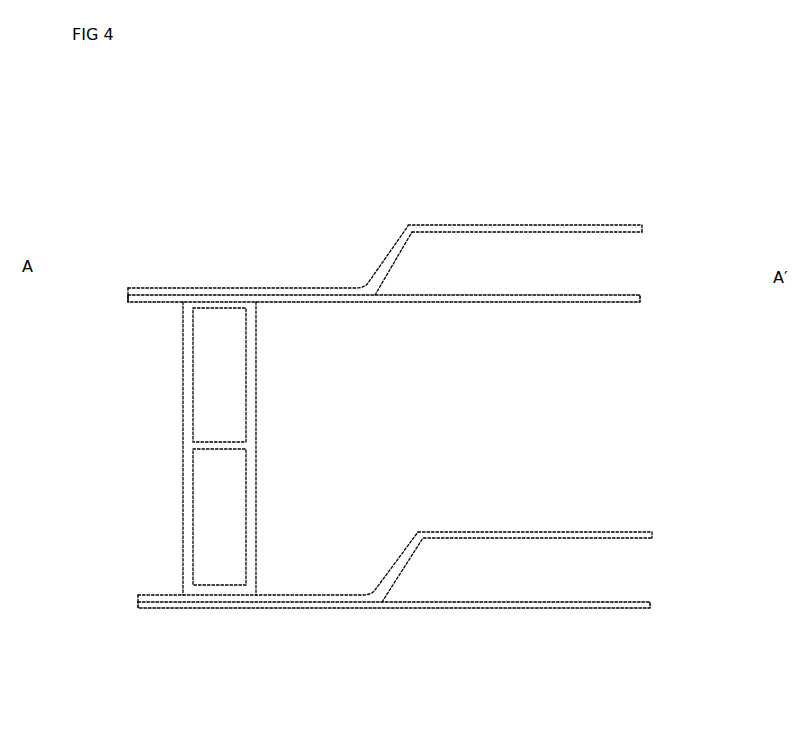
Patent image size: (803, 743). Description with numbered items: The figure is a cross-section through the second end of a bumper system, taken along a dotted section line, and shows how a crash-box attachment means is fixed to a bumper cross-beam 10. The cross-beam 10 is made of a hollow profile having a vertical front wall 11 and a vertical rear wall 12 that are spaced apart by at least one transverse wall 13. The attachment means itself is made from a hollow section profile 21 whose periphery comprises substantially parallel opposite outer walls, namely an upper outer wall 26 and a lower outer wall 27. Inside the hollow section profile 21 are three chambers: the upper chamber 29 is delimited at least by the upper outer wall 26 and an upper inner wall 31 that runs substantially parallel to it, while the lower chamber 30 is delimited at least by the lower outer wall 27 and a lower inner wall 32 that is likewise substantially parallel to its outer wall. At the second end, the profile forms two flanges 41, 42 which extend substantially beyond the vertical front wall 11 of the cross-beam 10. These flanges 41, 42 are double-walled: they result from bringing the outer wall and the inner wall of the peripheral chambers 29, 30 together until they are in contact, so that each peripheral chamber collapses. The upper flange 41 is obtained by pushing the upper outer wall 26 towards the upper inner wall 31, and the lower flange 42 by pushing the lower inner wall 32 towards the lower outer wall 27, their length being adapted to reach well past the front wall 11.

The cross-beam 10 is at (135, 408).
The vertical front wall 11 is at (183, 465).
The vertical rear wall 12 is at (256, 486).
The transverse wall 13 is at (218, 442).
The hollow section profile 21 is at (419, 165).
The upper outer wall 26 is at (500, 225).
The lower outer wall 27 is at (510, 608).
The upper chamber 29 is at (605, 267).
The lower chamber 30 is at (428, 549).
The upper inner wall 31 is at (618, 302).
The lower inner wall 32 is at (585, 532).
The upper flange 41 is at (145, 288).
The lower flange 42 is at (157, 608).